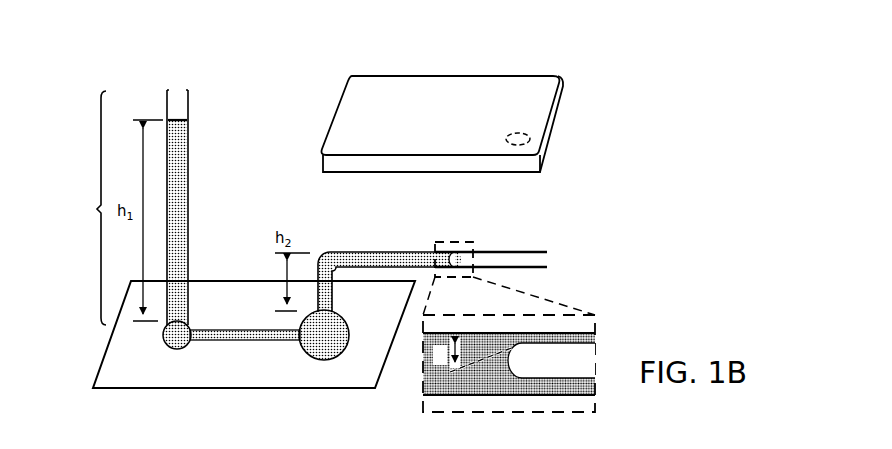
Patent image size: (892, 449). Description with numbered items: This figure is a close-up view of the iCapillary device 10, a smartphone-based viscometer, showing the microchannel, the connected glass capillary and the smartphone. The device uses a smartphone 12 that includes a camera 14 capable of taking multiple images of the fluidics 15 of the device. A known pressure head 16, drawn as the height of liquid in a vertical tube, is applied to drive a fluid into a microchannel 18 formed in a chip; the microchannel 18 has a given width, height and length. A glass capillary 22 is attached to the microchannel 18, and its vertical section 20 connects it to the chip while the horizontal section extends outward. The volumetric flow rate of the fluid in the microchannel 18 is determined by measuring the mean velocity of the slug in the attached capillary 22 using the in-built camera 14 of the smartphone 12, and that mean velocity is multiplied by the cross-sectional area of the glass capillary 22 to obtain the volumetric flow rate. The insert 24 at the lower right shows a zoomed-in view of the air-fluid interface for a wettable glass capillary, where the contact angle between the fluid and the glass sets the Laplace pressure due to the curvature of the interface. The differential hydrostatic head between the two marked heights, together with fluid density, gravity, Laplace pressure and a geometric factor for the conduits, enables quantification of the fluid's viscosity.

The iCapillary device 10 is at (645, 112).
The smartphone 12 is at (457, 86).
The camera 14 is at (532, 130).
The fluidics 15 is at (86, 208).
The pressure head 16 is at (189, 174).
The microchannel 18 is at (246, 340).
The capillary vertical section 20 is at (333, 287).
The glass capillary 22 is at (423, 272).
The insert 24 is at (522, 352).